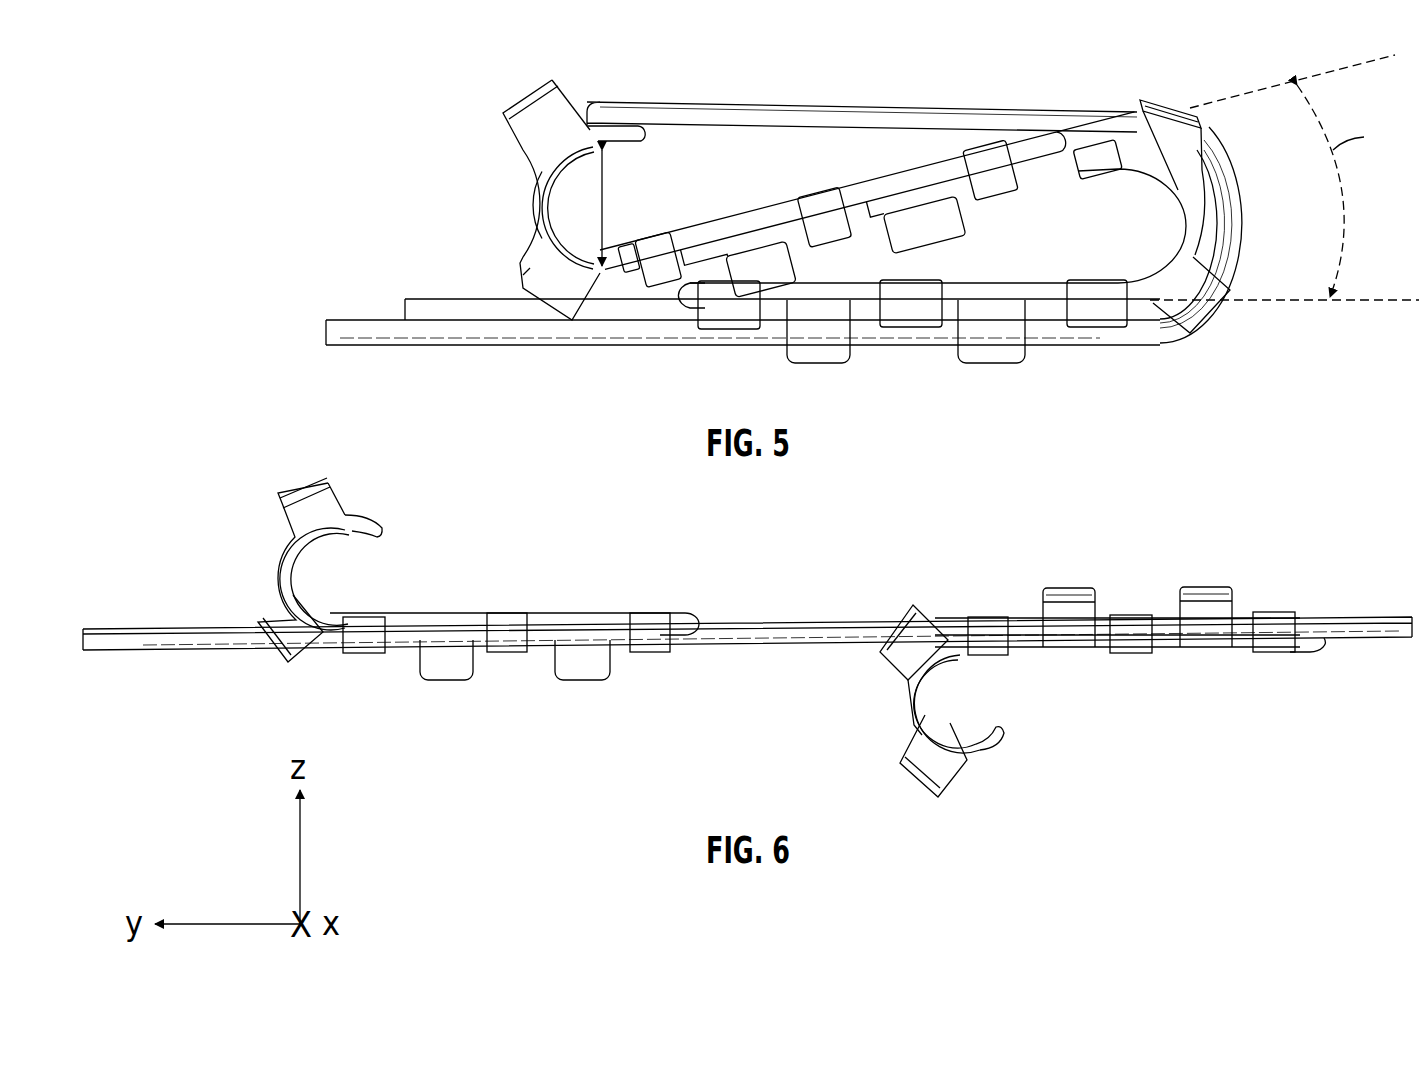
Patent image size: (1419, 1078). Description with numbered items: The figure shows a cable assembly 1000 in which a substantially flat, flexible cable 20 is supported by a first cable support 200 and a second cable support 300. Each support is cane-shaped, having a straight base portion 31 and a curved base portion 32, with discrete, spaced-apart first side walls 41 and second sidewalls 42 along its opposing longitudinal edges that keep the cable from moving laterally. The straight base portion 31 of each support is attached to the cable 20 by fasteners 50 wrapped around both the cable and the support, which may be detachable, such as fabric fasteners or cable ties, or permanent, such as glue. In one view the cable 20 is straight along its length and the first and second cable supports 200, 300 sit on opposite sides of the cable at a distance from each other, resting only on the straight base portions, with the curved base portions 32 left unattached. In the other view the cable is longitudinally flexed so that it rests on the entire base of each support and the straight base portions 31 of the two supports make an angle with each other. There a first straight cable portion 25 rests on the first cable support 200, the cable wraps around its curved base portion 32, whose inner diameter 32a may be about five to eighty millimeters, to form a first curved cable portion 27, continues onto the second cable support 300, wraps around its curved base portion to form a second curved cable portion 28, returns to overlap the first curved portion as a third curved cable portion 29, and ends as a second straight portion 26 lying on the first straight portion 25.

In FIG. 5, the cable assembly 1000 is at (386, 74).
In FIG. 5, the cable 20 is at (941, 127).
In FIG. 6, the cable 20 is at (758, 634).
In FIG. 5, the first straight cable portion 25 is at (648, 321).
In FIG. 5, the second straight portion 26 is at (723, 346).
In FIG. 5, the first curved cable portion 27 is at (1208, 244).
In FIG. 5, the second curved cable portion 28 is at (523, 181).
In FIG. 5, the third curved cable portion 29 is at (1221, 192).
In FIG. 5, the straight base portion 31 is at (705, 228).
In FIG. 5, the curved base portion 32 is at (630, 146).
In FIG. 6, the curved base portion 32 is at (364, 531).
In FIG. 5, the inner diameter 32a is at (603, 185).
In FIG. 6, the first side walls 41 is at (1078, 595).
In FIG. 6, the second sidewalls 42 is at (1075, 640).
In FIG. 6, the fasteners 50 is at (365, 641).
In FIG. 5, the first cable support 200 is at (1033, 279).
In FIG. 6, the first cable support 200 is at (435, 640).
In FIG. 5, the second cable support 300 is at (1040, 140).
In FIG. 6, the second cable support 300 is at (1205, 638).